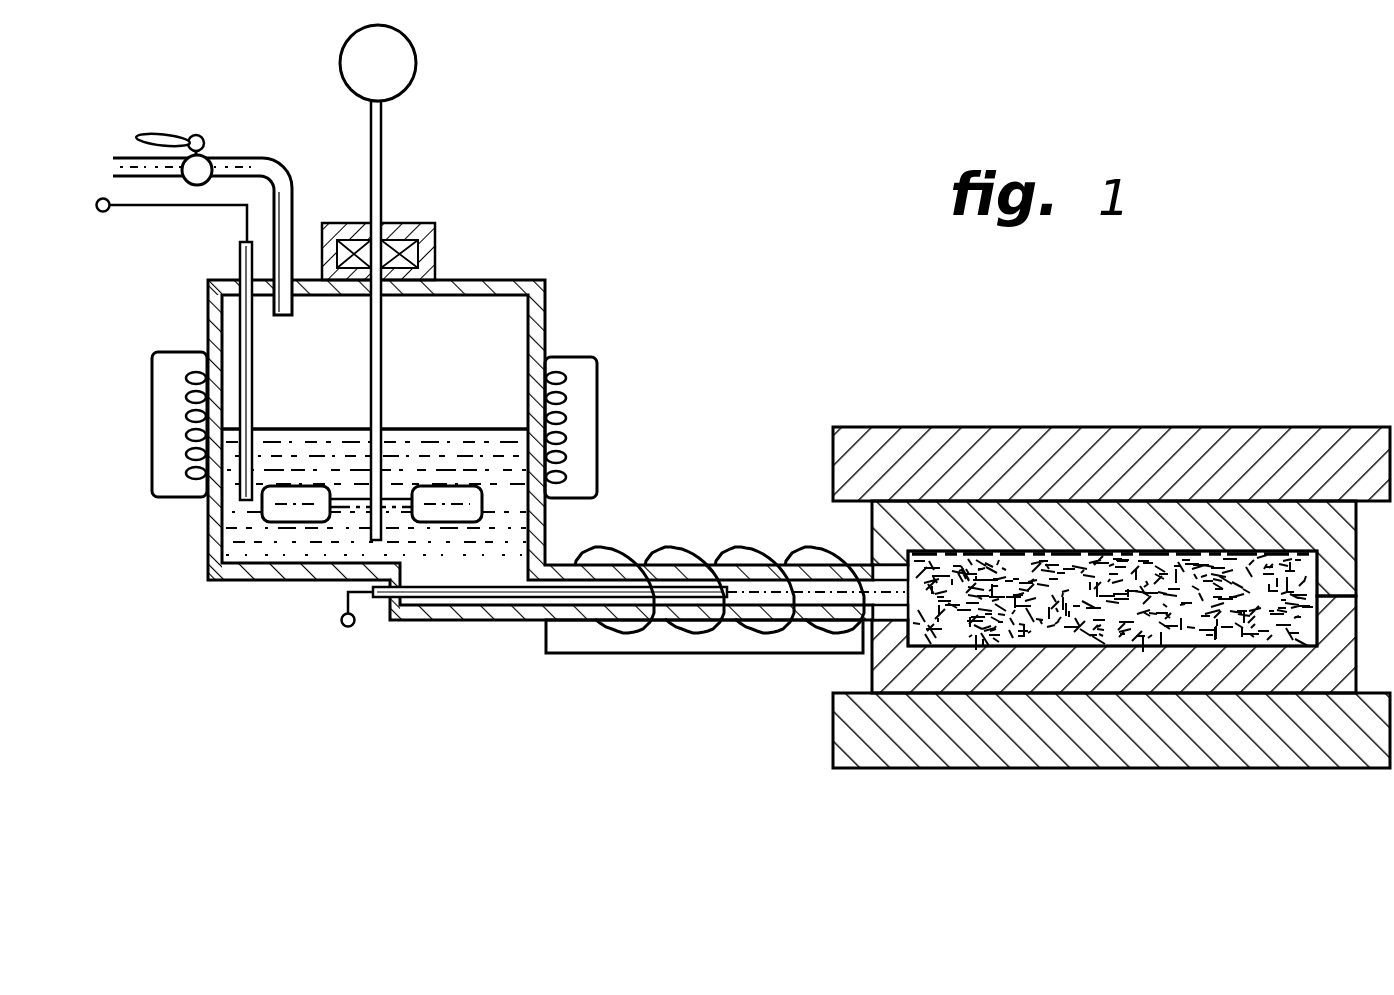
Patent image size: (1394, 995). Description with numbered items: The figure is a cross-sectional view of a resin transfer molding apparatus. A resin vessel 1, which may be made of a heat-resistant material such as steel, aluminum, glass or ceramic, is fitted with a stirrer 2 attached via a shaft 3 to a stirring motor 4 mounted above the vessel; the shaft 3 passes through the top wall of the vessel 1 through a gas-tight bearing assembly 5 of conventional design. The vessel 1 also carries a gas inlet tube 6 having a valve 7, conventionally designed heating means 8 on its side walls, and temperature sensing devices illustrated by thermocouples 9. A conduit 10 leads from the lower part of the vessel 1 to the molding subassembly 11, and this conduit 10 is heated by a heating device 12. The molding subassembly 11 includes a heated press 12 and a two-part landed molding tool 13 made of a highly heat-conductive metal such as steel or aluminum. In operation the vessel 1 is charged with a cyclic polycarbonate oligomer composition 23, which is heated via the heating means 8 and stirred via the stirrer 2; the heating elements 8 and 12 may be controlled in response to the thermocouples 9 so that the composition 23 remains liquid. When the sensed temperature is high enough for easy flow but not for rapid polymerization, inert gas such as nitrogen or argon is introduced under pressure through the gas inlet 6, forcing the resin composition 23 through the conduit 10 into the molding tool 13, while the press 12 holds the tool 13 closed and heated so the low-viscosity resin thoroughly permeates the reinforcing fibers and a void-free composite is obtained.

The resin vessel 1 is at (546, 316).
The stirrer 2 is at (447, 497).
The shaft 3 is at (383, 408).
The stirring motor 4 is at (417, 65).
The gas-tight bearing assembly 5 is at (410, 290).
The gas inlet tube 6 is at (287, 172).
The valve 7 is at (207, 153).
The heating means 8 is at (152, 407).
The thermocouples 9 is at (240, 256).
The conduit 10 is at (835, 598).
The molding tool / molding subassembly 11 is at (968, 592).
The heating device / heated press 12 is at (665, 548).
The two-part landed molding tool 13 is at (888, 520).
The cyclic polycarbonate oligomer composition 23 is at (305, 445).